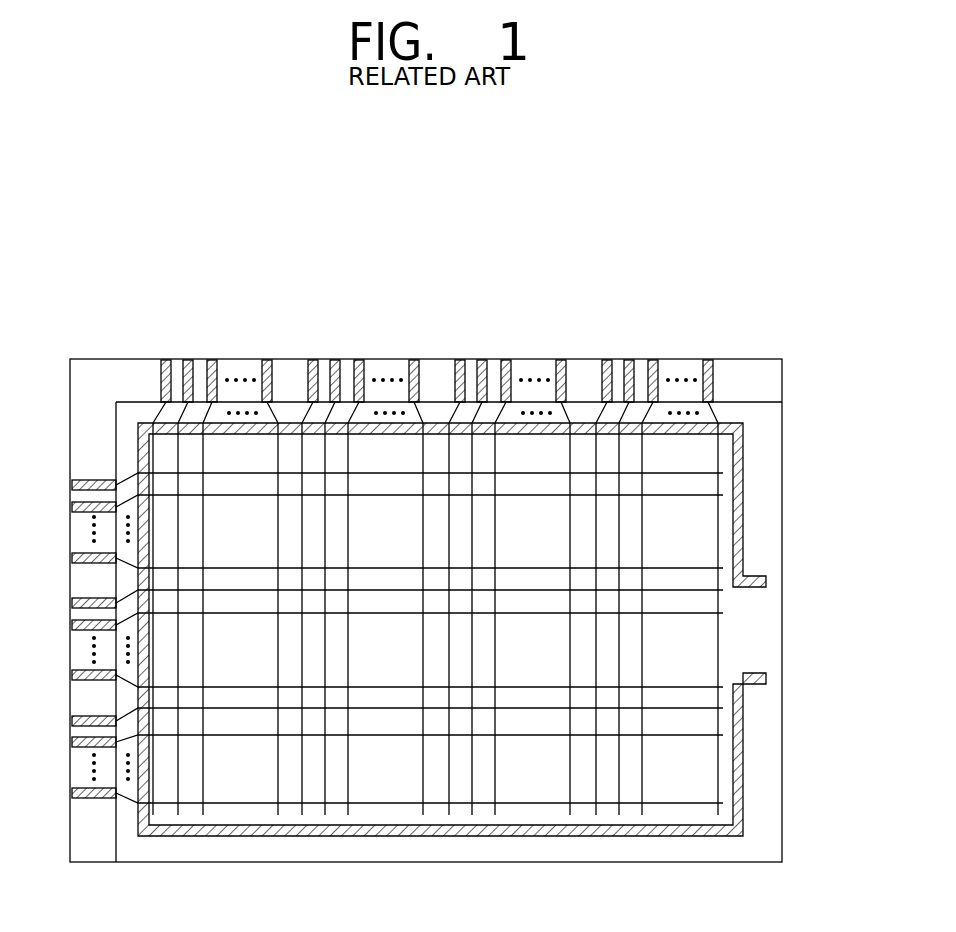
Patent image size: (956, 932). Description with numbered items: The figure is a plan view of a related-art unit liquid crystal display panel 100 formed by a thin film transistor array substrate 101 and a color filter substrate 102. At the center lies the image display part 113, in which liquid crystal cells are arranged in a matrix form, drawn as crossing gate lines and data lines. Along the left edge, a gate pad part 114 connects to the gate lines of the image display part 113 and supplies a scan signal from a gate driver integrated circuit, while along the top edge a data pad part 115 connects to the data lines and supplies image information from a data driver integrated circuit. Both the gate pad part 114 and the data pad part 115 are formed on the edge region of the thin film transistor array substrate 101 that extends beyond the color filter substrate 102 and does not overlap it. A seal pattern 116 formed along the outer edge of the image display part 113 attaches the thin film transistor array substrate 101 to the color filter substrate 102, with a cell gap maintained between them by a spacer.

The liquid crystal display panel 100 is at (99, 350).
The thin film transistor array substrate 101 is at (768, 380).
The color filter substrate 102 is at (768, 437).
The image display part 113 is at (402, 543).
The gate pad part 114 is at (62, 482).
The data pad part 115 is at (712, 347).
The seal pattern 116 is at (745, 503).